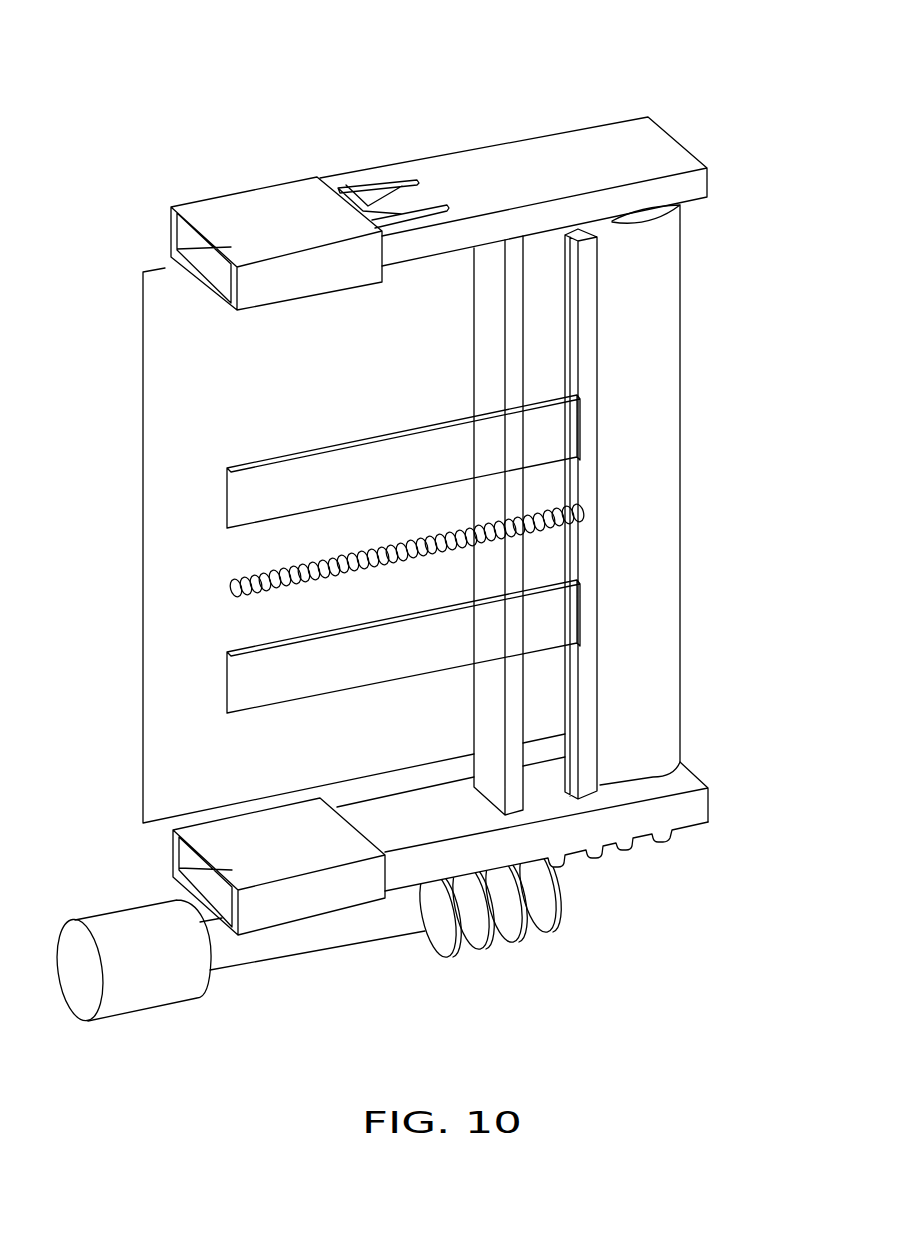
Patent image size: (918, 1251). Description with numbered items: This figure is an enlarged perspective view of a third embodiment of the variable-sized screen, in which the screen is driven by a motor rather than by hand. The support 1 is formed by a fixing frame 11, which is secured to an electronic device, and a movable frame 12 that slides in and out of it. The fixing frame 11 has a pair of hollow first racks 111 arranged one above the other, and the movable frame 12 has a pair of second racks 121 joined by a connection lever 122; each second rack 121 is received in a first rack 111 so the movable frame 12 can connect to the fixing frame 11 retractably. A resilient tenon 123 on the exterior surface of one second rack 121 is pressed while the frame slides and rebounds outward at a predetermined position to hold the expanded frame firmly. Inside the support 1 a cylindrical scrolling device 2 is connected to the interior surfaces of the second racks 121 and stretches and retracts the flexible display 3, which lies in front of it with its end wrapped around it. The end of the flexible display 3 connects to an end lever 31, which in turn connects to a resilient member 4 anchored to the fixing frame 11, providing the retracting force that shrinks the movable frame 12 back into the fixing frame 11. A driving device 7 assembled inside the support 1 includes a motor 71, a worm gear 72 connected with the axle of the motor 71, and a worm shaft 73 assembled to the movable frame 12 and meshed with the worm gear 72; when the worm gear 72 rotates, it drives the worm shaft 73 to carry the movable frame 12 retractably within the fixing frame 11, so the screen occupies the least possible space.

The support 1 is at (313, 136).
The fixing frame 11 is at (252, 170).
The first rack 111 is at (274, 865).
The movable frame 12 is at (543, 108).
The second rack 121 is at (690, 806).
The connection lever 122 is at (513, 290).
The resilient tenon 123 is at (405, 197).
The scrolling device 2 is at (680, 340).
The flexible display 3 is at (120, 423).
The end lever 31 is at (597, 425).
The resilient member 4 is at (218, 594).
The driving device 7 is at (221, 997).
The motor 71 is at (149, 988).
The worm gear 72 is at (500, 942).
The worm shaft 73 is at (628, 847).